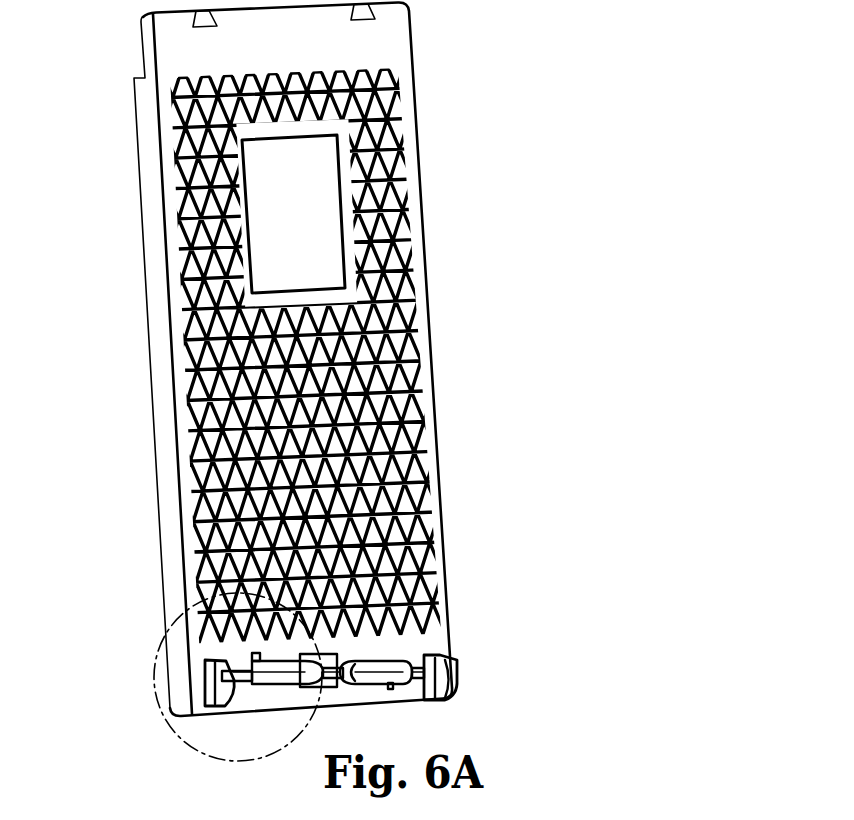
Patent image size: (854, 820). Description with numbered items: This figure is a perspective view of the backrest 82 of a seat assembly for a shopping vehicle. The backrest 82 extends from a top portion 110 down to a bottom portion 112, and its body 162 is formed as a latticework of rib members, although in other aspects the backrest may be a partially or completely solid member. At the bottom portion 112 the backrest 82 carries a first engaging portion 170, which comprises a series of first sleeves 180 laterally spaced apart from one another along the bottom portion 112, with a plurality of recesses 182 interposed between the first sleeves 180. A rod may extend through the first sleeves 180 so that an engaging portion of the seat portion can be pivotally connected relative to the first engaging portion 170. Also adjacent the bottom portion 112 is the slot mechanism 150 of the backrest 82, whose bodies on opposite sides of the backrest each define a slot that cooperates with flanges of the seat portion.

The backrest portion 82 is at (323, 355).
The top portion 110 is at (146, 54).
The bottom portion 112 is at (166, 685).
The slot mechanism 150 is at (205, 703).
The body 162 is at (413, 372).
The first engaging portion 170 is at (364, 665).
The first sleeves 180 is at (373, 674).
The recesses 182 is at (330, 660).